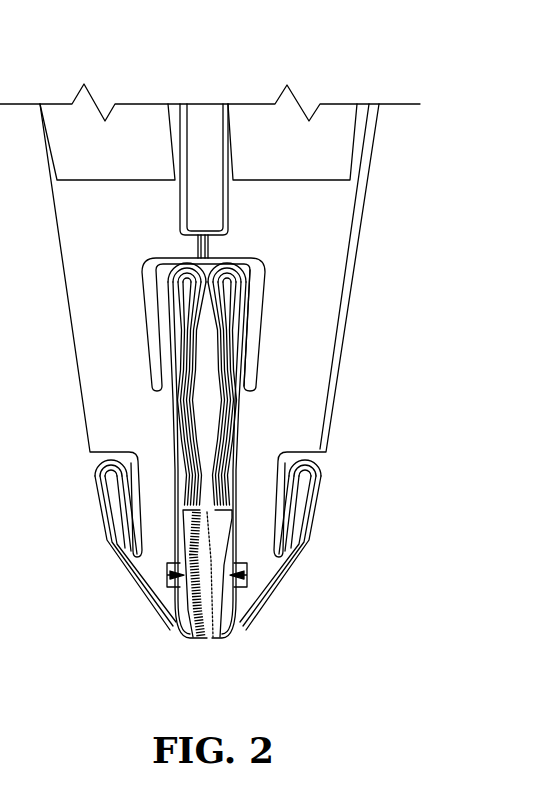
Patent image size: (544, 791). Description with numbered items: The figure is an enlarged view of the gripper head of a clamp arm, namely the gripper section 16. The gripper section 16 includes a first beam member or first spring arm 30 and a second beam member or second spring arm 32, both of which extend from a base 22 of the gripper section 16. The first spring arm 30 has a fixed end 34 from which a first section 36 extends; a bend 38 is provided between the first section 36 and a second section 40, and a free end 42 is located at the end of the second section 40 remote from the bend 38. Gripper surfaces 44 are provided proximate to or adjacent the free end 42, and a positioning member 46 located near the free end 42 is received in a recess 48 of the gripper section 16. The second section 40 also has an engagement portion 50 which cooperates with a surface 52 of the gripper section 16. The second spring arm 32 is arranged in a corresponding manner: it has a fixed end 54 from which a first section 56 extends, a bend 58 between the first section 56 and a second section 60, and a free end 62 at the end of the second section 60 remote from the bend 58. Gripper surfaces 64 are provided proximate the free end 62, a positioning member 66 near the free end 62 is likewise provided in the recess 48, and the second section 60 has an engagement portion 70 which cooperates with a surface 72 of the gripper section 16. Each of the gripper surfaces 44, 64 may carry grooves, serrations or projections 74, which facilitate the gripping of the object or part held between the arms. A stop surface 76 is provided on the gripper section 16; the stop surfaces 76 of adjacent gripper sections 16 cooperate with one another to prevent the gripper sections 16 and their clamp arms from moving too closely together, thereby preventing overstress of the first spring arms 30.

The gripper section 16 is at (433, 153).
The base 22 is at (339, 235).
The first spring arm 30 is at (245, 426).
The second spring arm 32 is at (318, 516).
The fixed end 34 is at (232, 397).
The first section 36 is at (245, 331).
The bend 38 is at (247, 261).
The second section 40 is at (205, 404).
The free end 42 is at (218, 500).
The gripper surfaces 44 is at (193, 543).
The positioning member 46 is at (233, 571).
The recess 48 is at (233, 584).
The engagement portion 50 is at (235, 406).
The surface 52 is at (237, 438).
The fixed end 54 is at (229, 566).
The first section 56 is at (292, 498).
The bend 58 is at (318, 463).
The second section 60 is at (247, 592).
The free end 62 is at (238, 641).
The gripper surfaces 64 is at (196, 640).
The positioning member 66 is at (236, 600).
The engagement portion 70 is at (240, 576).
The surface 72 is at (250, 635).
The grooves, serrations or projections 74 is at (183, 615).
The stop surface 76 is at (212, 251).